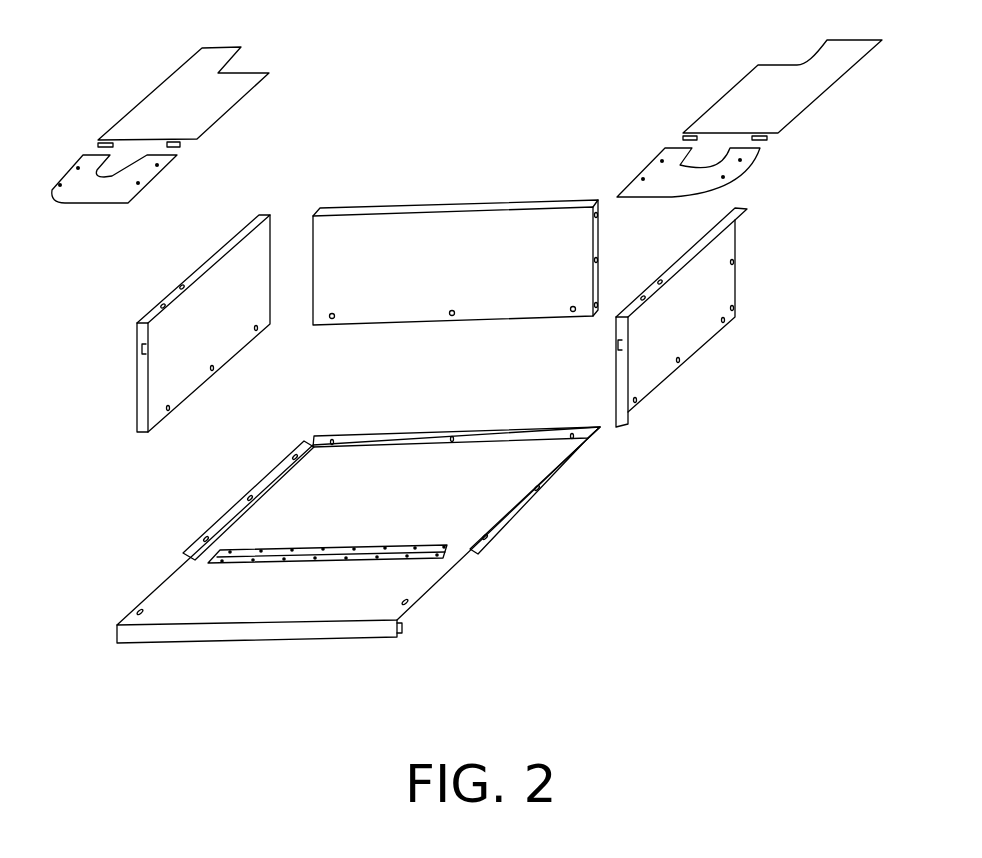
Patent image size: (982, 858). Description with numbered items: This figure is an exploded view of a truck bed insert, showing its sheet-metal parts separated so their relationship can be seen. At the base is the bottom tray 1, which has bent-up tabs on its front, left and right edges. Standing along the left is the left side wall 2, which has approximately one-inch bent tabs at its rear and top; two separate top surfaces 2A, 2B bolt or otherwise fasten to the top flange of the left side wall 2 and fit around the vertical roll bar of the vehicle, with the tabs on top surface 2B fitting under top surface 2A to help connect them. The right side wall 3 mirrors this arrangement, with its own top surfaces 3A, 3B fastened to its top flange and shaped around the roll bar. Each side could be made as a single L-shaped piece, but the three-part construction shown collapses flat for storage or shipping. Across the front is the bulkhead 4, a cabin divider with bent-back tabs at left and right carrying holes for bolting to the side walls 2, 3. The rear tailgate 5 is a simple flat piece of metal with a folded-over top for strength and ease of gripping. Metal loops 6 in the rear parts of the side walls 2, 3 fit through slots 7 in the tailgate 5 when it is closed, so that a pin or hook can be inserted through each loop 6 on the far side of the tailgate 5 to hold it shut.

The bottom tray 1 is at (580, 491).
The left side wall 2 is at (134, 388).
The left top surface 2A is at (97, 214).
The left top surface 2B is at (186, 121).
The right side wall 3 is at (676, 336).
The right top surface 3A is at (727, 183).
The right top surface 3B is at (781, 106).
The front bulkhead 4 is at (479, 202).
The rear tailgate 5 is at (452, 579).
The metal loop 6 is at (130, 347).
The slot 7 is at (127, 609).